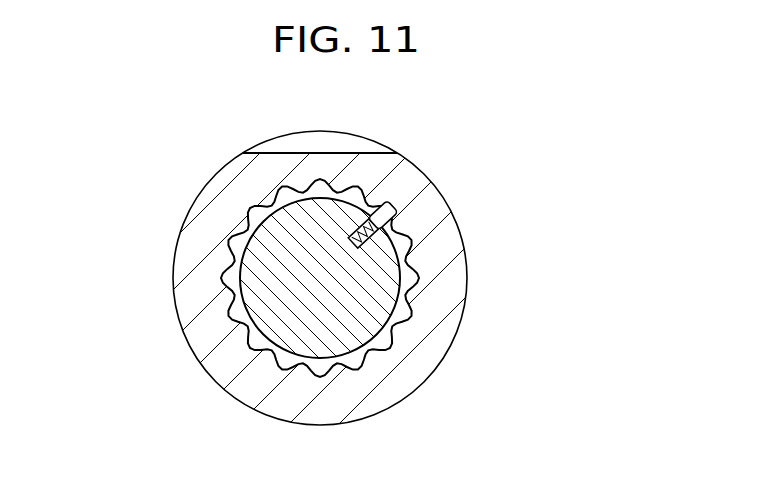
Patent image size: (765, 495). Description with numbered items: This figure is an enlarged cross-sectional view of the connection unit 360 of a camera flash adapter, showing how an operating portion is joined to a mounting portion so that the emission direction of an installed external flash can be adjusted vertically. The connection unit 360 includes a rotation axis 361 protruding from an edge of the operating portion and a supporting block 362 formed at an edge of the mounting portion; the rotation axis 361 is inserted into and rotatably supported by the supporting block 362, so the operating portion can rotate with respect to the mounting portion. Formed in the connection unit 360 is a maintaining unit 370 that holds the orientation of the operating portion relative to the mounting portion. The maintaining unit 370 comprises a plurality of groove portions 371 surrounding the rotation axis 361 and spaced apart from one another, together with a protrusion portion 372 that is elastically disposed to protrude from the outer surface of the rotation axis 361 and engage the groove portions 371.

The connection unit 360 is at (255, 278).
The rotation axis 361 is at (267, 268).
The supporting block 362 is at (207, 335).
The maintaining unit 370 is at (412, 276).
The groove portions 371 is at (418, 288).
The protrusion portion 372 is at (393, 210).